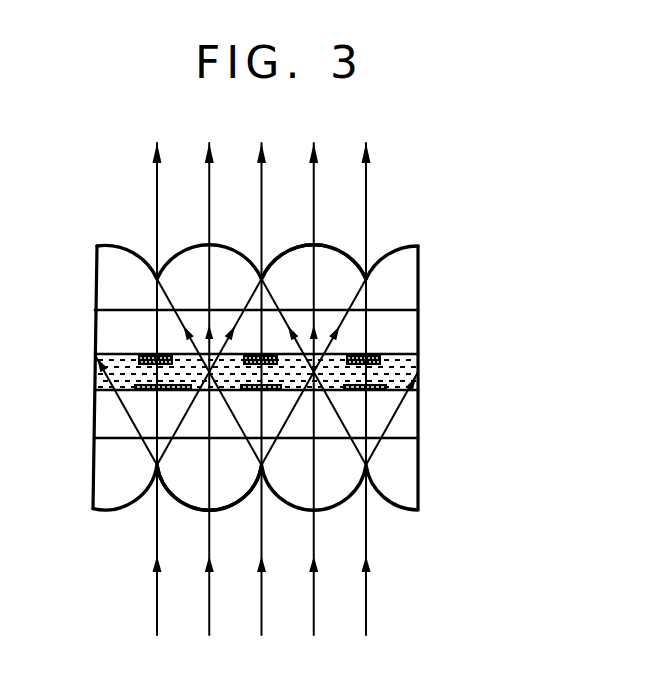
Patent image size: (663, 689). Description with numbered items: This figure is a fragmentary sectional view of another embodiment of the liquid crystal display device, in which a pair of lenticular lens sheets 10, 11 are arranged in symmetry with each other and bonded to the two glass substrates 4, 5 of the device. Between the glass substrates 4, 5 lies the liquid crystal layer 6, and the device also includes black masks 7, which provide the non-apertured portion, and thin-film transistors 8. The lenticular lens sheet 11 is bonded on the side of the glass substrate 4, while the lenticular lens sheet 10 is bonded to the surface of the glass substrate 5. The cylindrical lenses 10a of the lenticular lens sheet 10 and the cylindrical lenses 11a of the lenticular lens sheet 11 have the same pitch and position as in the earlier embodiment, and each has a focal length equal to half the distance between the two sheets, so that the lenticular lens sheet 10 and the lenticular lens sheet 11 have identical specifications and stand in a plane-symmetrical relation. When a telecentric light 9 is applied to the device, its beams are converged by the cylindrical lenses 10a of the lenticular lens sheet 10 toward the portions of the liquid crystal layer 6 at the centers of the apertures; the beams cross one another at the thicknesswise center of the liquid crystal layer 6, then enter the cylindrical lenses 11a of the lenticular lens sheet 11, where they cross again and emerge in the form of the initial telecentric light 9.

The glass substrate 4 is at (418, 340).
The glass substrate 5 is at (420, 418).
The liquid crystal layer 6 is at (405, 366).
The black mask 7 is at (367, 391).
The thin-film transistor 8 is at (367, 355).
The telecentric light 9 is at (262, 612).
The lenticular lens sheet 10 is at (425, 505).
The cylindrical lens 10a is at (188, 505).
The lenticular lens sheet 11 is at (402, 262).
The cylindrical lens 11a is at (332, 248).